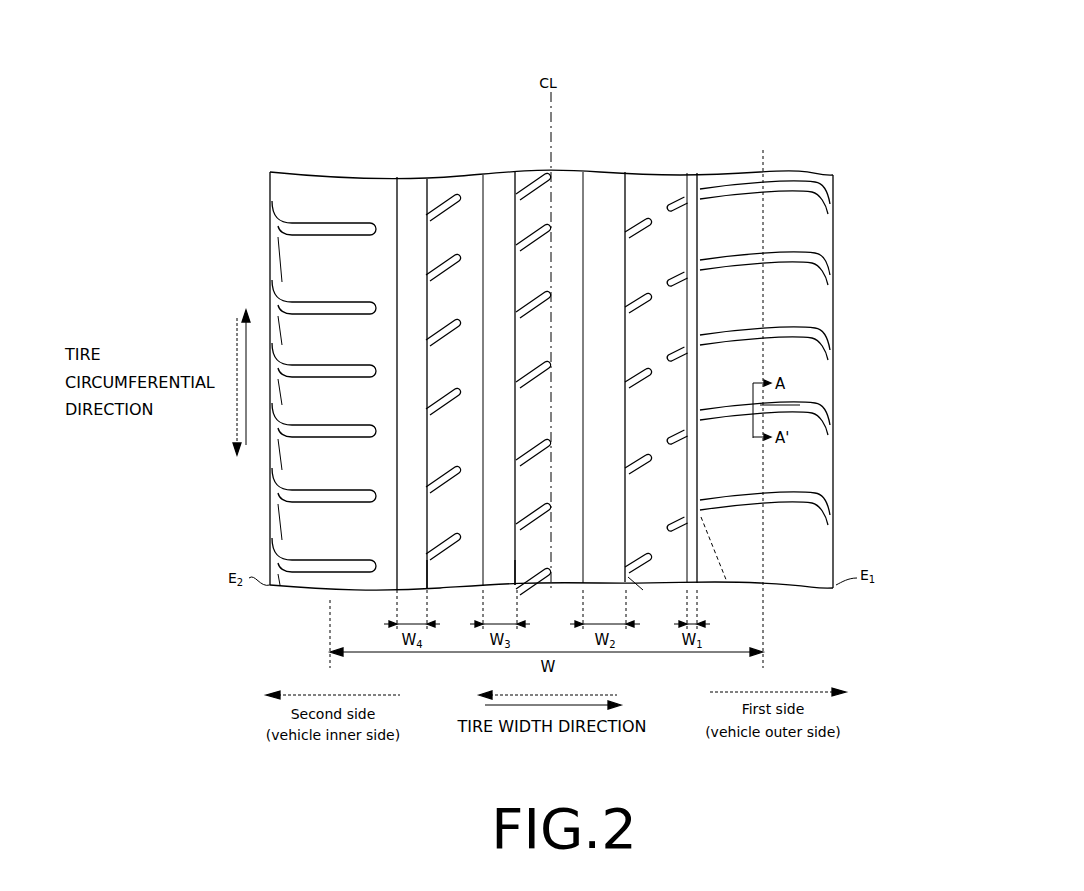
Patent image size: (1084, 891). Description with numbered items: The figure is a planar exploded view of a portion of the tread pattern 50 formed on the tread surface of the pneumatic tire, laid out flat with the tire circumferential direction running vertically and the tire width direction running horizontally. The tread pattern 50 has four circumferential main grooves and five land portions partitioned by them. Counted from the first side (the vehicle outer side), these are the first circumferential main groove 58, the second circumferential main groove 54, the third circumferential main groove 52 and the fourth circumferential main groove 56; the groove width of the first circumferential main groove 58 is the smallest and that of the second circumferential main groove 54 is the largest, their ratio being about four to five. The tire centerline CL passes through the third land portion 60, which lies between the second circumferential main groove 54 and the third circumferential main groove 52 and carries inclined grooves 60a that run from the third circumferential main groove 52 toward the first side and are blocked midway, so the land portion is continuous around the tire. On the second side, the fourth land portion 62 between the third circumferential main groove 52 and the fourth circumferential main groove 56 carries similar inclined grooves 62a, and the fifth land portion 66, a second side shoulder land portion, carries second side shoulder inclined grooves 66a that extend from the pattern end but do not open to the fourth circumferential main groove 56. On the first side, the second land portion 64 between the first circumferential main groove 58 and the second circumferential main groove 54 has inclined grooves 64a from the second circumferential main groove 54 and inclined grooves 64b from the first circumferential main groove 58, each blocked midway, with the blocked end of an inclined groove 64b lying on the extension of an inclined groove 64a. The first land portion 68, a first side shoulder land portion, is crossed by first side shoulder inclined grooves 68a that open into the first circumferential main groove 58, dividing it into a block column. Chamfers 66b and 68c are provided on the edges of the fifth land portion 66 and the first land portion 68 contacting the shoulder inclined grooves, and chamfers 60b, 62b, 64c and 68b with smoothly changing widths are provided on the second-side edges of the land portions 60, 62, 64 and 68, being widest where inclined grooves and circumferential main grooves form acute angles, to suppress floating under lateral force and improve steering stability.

The tread pattern 50 is at (775, 84).
The third circumferential main groove 52 is at (498, 200).
The second circumferential main groove 54 is at (600, 195).
The fourth circumferential main groove 56 is at (410, 195).
The first circumferential main groove 58 is at (692, 200).
The third land portion 60 is at (546, 368).
The inclined groove 60a is at (533, 228).
The chamfer 60b is at (518, 590).
The fourth land portion 62 is at (454, 368).
The inclined groove 62a is at (443, 190).
The chamfer 62b is at (431, 589).
The second land portion 64 is at (652, 368).
The inclined groove 64a is at (638, 200).
The inclined groove 64b is at (672, 200).
The chamfer 64c is at (642, 598).
The fifth land portion 66 is at (324, 359).
The second side shoulder inclined groove 66a is at (355, 222).
The chamfer 66b is at (312, 224).
The first land portion 68 is at (782, 368).
The first side shoulder inclined groove 68a is at (745, 188).
The chamfer 68b is at (708, 590).
The chamfer 68c is at (800, 405).